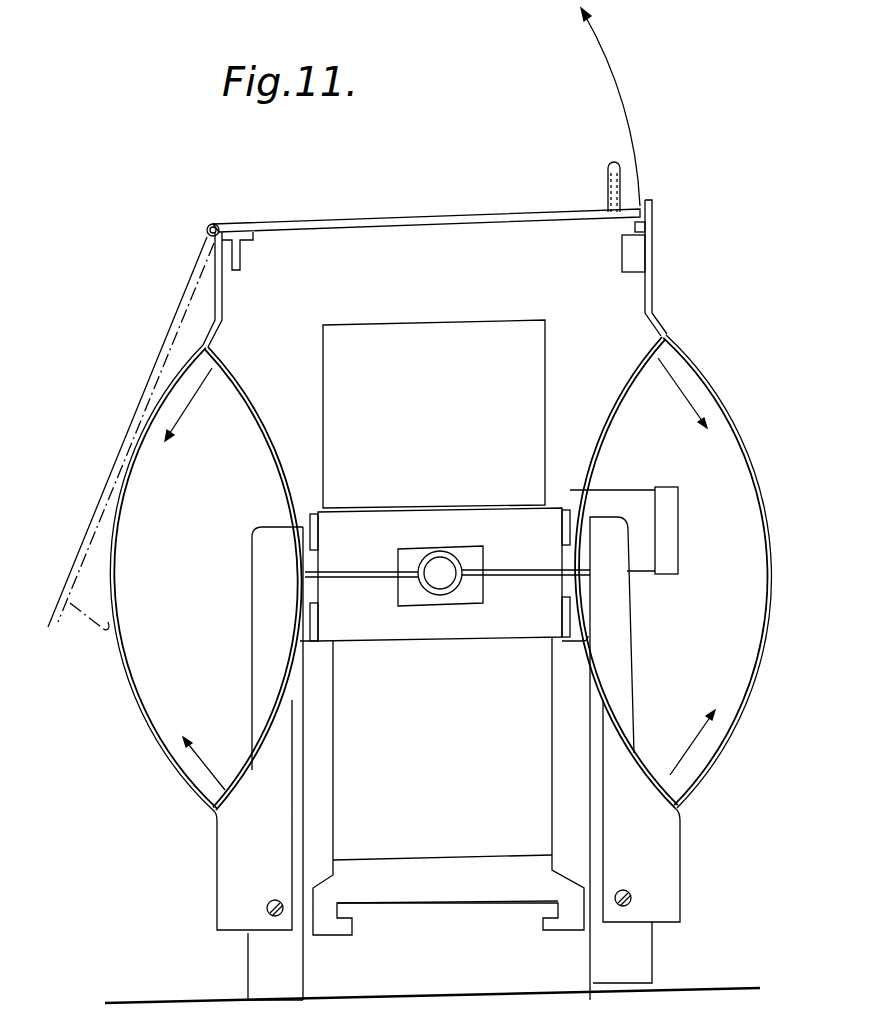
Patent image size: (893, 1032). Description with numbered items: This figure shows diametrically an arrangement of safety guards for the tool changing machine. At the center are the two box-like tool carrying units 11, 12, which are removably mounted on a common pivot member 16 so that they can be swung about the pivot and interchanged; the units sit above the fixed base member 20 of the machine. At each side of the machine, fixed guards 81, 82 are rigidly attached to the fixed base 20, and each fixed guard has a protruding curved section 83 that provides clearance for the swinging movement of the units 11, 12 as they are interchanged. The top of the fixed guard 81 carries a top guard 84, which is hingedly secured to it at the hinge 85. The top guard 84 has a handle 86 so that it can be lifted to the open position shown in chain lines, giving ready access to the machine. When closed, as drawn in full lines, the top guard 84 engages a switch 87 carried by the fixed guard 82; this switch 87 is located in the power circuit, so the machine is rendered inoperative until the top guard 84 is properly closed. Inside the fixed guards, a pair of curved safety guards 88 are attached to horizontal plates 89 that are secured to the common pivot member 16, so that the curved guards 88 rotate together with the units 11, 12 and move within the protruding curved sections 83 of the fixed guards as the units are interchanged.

The tool carrying unit 11 is at (472, 322).
The tool carrying unit 12 is at (455, 850).
The common pivot member 16 is at (441, 551).
The fixed base member 20 is at (320, 965).
The fixed guard 81 is at (217, 868).
The fixed guard 82 is at (684, 852).
The protruding curved section 83 is at (163, 757).
The top guard 84 is at (394, 216).
The hinge 85 is at (216, 224).
The handle 86 is at (610, 180).
The switch 87 is at (640, 257).
The curved safety guard 88 is at (243, 383).
The horizontal plate 89 is at (373, 577).